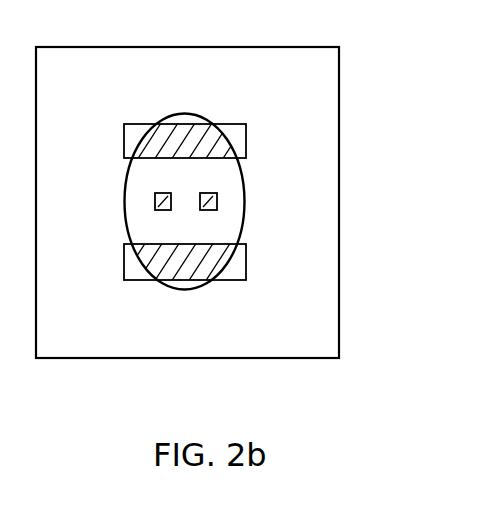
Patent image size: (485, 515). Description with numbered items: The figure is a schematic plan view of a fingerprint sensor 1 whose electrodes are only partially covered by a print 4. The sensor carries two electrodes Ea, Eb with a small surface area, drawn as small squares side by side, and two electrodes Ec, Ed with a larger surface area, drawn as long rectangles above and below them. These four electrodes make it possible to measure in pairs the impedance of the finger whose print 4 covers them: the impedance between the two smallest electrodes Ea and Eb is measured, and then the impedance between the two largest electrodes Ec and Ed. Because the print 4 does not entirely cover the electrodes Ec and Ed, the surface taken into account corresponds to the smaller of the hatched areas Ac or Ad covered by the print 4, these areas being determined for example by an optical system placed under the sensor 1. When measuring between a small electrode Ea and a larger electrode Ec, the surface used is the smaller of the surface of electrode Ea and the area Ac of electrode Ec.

The fingerprint sensor 1 is at (296, 90).
The print 4 is at (205, 283).
The electrode Ea is at (157, 202).
The electrode Eb is at (217, 200).
The electrode Ec is at (181, 140).
The electrode Ed is at (195, 265).
The area covered by the print Ac is at (192, 140).
The area covered by the print Ad is at (192, 262).